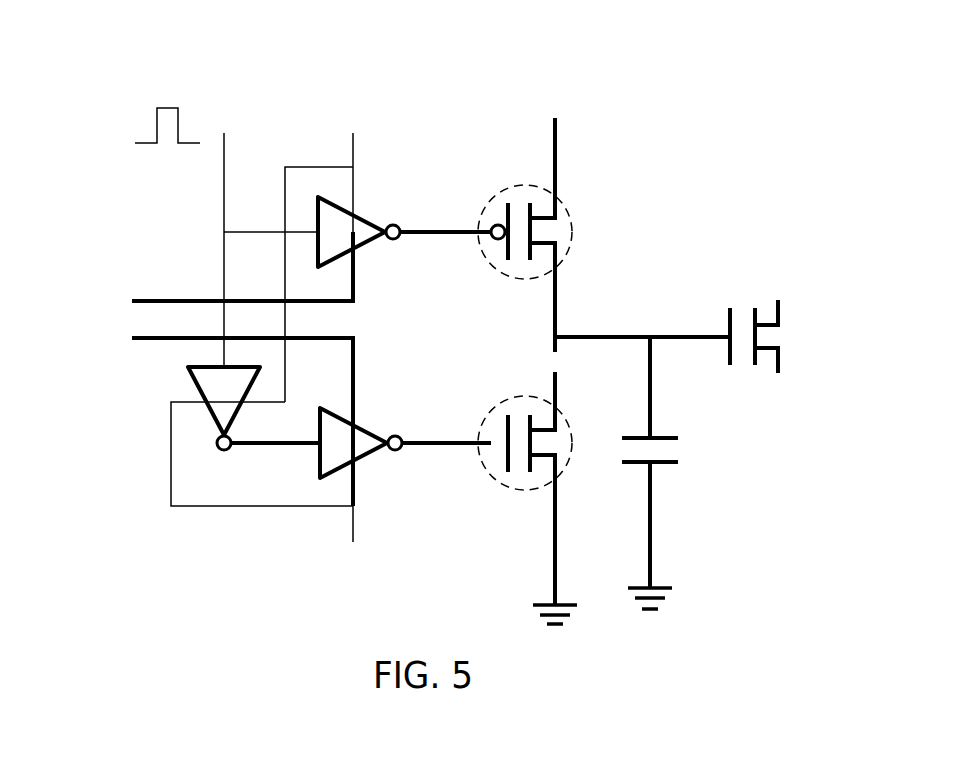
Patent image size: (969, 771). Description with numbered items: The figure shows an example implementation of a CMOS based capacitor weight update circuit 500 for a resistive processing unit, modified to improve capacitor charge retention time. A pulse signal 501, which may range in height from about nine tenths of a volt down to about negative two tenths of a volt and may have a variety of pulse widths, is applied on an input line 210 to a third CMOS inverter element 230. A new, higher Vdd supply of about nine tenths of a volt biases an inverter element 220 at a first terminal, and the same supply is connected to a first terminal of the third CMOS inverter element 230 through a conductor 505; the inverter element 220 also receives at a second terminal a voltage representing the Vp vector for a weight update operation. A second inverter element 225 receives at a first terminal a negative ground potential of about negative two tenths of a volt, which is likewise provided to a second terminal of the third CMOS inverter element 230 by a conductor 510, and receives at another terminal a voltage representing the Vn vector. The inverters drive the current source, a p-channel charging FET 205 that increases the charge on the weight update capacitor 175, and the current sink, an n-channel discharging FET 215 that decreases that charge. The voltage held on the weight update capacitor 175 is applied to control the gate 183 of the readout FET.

The CMOS based capacitor weight update circuit 500 is at (98, 27).
The pulse signal 501 is at (157, 127).
The conductor 505 is at (285, 183).
The input line 210 is at (224, 193).
The inverter element 220 is at (365, 220).
The inverter element 225 is at (365, 430).
The third CMOS inverter element 230 is at (217, 437).
The p-channel FET 205 is at (493, 193).
The n-channel FET 215 is at (497, 488).
The conductor 510 is at (171, 440).
The gate 183 is at (722, 332).
The weight update capacitor 175 is at (692, 480).